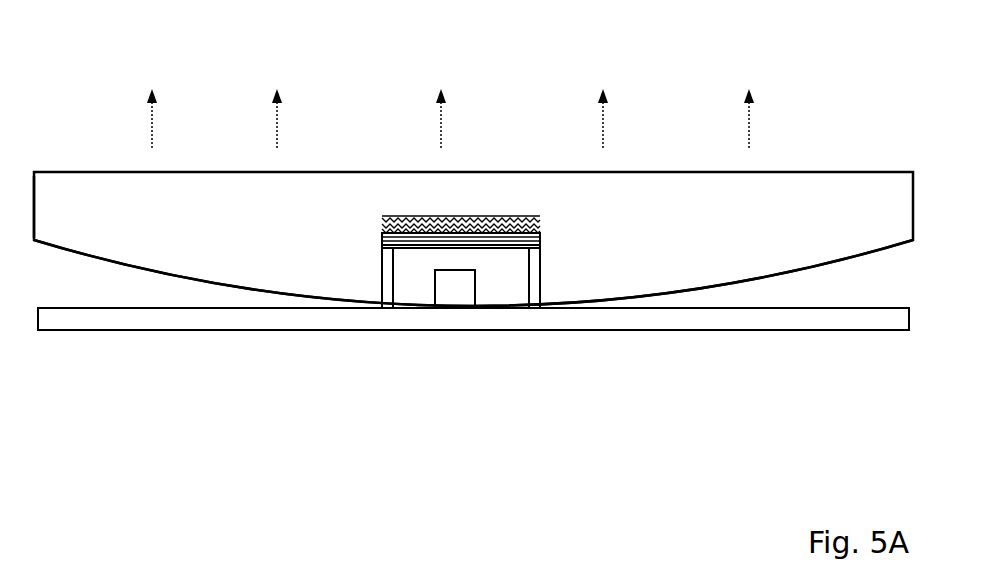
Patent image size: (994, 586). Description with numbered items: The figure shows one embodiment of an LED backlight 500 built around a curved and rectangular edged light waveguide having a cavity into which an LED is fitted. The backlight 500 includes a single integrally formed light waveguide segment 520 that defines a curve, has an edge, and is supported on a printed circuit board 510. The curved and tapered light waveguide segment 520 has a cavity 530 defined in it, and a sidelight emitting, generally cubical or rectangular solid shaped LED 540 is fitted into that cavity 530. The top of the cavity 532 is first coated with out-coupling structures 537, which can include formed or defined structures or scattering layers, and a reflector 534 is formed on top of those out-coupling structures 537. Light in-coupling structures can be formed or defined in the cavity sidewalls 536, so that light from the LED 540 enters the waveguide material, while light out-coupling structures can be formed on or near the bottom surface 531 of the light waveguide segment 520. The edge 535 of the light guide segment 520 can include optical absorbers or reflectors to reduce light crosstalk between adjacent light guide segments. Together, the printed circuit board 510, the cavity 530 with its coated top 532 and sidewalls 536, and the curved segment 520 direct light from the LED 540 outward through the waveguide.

The LED backlight 500 is at (103, 82).
The printed circuit board 510 is at (680, 315).
The light waveguide segment 520 is at (783, 170).
The cavity 530 is at (475, 263).
The bottom surface 531 is at (148, 265).
The top of the cavity 532 is at (382, 220).
The reflector 534 is at (382, 238).
The edge 535 is at (36, 218).
The cavity sidewalls 536 is at (541, 270).
The out-coupling structures 537 is at (500, 216).
The LED 540 is at (460, 285).